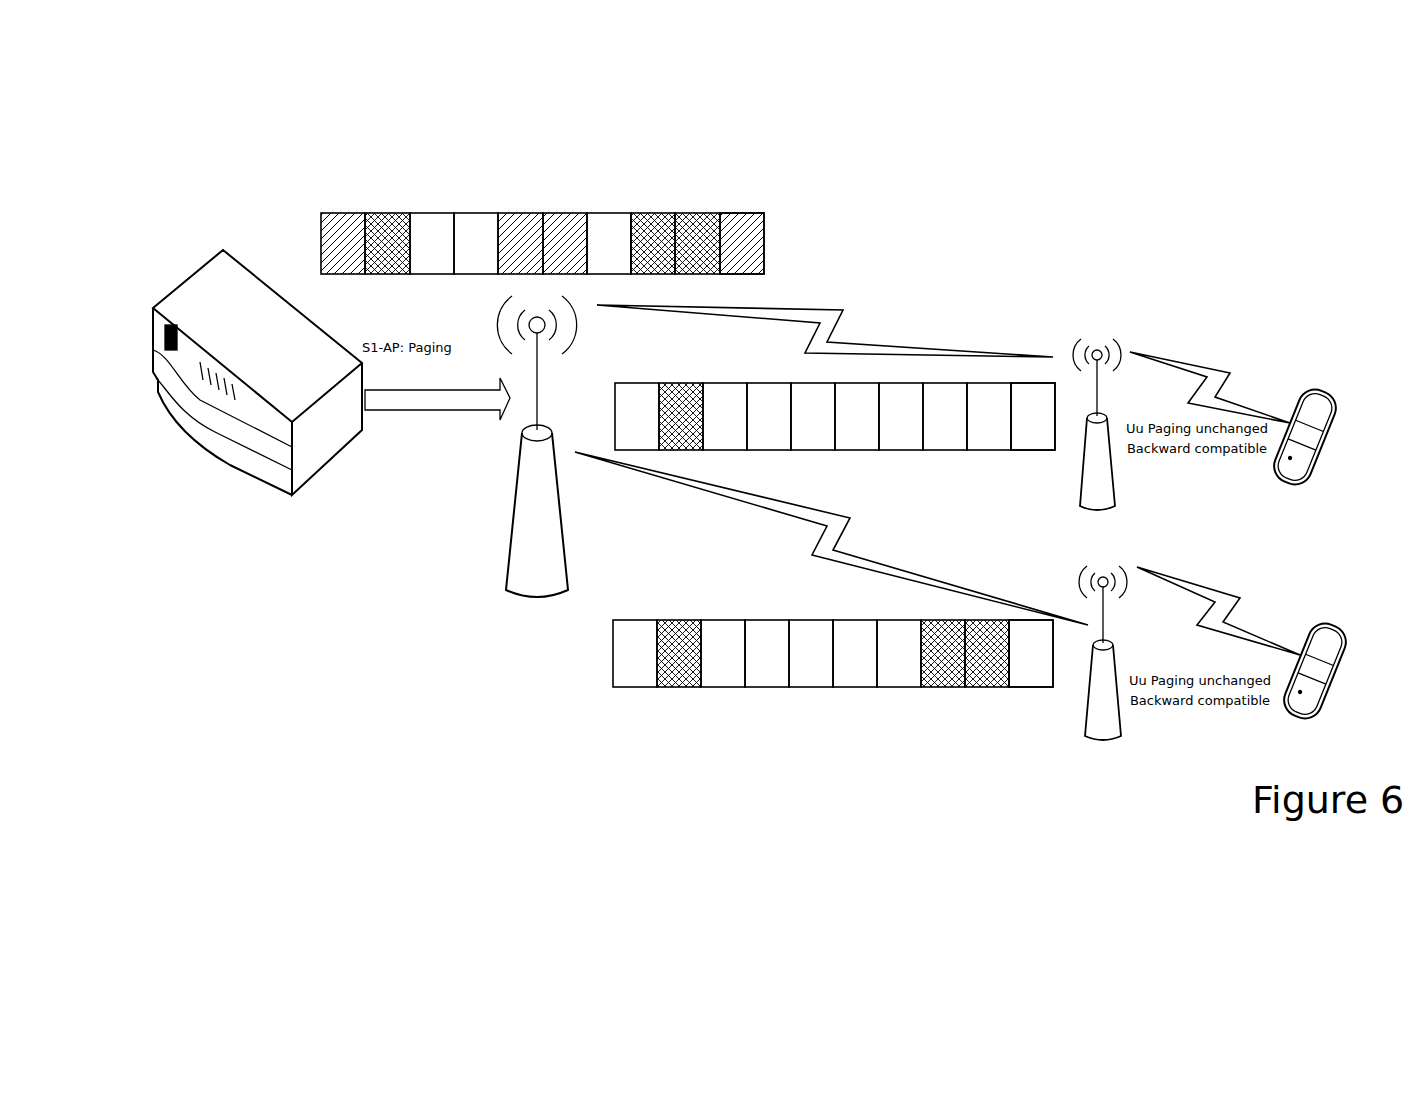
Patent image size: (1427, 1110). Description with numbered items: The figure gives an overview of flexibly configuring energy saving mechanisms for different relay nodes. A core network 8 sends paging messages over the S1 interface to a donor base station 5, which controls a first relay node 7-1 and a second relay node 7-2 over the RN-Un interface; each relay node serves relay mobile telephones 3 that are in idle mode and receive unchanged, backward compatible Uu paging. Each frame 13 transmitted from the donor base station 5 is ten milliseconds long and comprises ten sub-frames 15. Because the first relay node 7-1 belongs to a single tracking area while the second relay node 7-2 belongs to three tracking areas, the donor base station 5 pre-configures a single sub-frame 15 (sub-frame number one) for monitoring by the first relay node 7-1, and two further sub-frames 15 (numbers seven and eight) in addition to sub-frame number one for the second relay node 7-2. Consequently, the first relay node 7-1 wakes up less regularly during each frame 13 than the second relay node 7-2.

The frame 13 is at (748, 170).
The sub-frame 15 is at (752, 213).
The core network 8 is at (242, 474).
The donor base station 5 is at (500, 538).
The first relay node 7-1 is at (1097, 345).
The second relay node 7-2 is at (1103, 572).
The relay mobile telephone 3 is at (1328, 392).